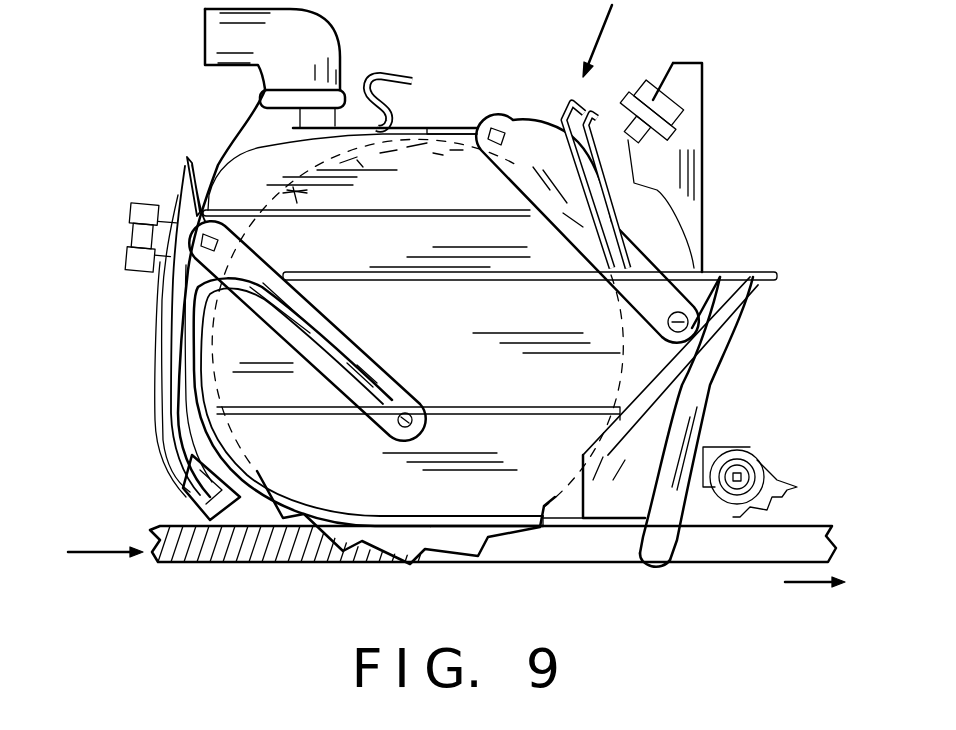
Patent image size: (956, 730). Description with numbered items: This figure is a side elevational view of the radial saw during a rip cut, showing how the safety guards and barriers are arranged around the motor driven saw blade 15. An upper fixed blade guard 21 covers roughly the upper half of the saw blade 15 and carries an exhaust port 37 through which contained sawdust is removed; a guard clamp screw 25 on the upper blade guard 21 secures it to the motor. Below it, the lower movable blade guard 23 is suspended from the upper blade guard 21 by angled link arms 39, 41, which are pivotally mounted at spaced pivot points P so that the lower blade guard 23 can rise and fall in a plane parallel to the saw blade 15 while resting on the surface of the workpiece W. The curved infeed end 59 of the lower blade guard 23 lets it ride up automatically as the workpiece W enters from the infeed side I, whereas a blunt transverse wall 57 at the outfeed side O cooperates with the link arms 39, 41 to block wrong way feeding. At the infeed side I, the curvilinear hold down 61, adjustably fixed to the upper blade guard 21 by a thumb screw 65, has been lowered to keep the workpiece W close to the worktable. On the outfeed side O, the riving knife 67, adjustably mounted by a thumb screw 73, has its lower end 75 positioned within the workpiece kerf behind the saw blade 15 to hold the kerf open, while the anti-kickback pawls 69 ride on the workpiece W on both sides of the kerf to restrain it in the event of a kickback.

The motor driven saw blade 15 is at (435, 182).
The upper fixed blade guard 21 is at (238, 185).
The lower movable blade guard 23 is at (320, 452).
The guard clamp screw 25 is at (398, 75).
The exhaust port 37 is at (313, 38).
The link arm 39 is at (290, 327).
The link arm 41 is at (617, 253).
The blunt transverse wall 57 is at (590, 514).
The infeed end 59 is at (315, 527).
The hold down 61 is at (187, 500).
The thumb screw 65 is at (137, 240).
The riving knife 67 is at (690, 417).
The anti-kickback pawls 69 is at (767, 490).
The thumb screw 73 is at (638, 97).
The lower end of the riving knife 75 is at (660, 556).
The pivot point P is at (203, 243).
The workpiece W is at (238, 552).
The infeed side I is at (95, 551).
The outfeed side O is at (830, 581).